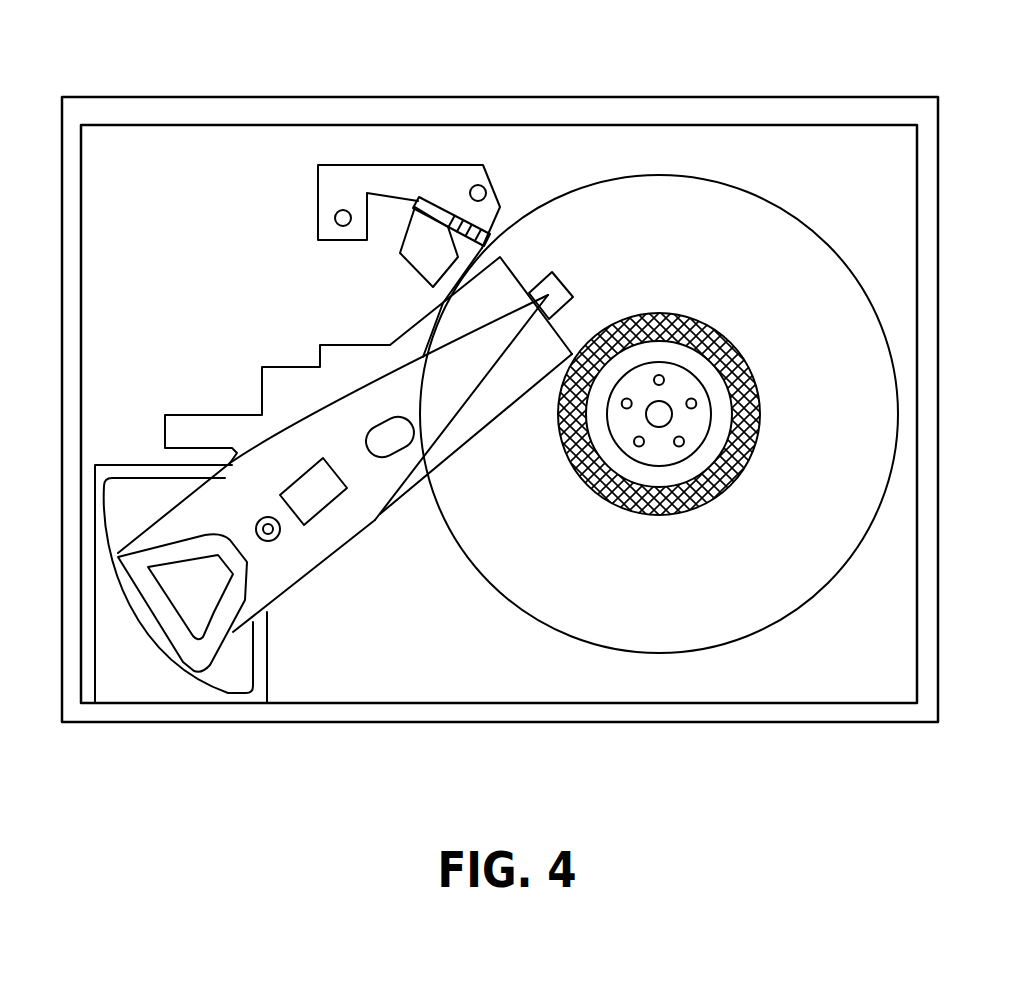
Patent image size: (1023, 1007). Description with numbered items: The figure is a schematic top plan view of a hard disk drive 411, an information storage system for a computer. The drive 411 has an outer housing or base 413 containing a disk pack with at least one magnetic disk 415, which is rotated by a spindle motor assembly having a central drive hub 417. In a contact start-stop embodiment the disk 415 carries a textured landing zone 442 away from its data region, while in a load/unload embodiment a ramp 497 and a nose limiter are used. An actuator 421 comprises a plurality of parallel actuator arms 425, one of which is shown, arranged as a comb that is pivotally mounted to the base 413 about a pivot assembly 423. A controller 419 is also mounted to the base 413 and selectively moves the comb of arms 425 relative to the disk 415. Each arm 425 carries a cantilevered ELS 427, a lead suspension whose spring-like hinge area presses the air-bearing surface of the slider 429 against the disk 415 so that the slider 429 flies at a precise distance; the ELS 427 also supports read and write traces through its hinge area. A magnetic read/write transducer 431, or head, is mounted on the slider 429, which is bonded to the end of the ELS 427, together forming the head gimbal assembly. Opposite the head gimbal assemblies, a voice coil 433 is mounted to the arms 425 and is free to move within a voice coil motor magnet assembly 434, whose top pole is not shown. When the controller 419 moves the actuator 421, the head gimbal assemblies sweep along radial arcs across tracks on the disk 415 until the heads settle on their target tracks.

The hard disk drive 411 is at (532, 34).
The base 413 is at (927, 158).
The magnetic disk 415 is at (780, 205).
The textured landing zone 442 is at (678, 313).
The central drive hub 417 is at (694, 422).
The controller 419 is at (172, 684).
The actuator 421 is at (272, 384).
The pivot assembly 423 is at (274, 540).
The actuator arm 425 is at (377, 522).
The ELS 427 is at (460, 372).
The slider 429 is at (559, 277).
The magnetic read/write transducer 431 is at (574, 297).
The voice coil 433 is at (153, 554).
The voice coil motor magnet assembly 434 is at (153, 626).
The ramp 497 is at (430, 280).